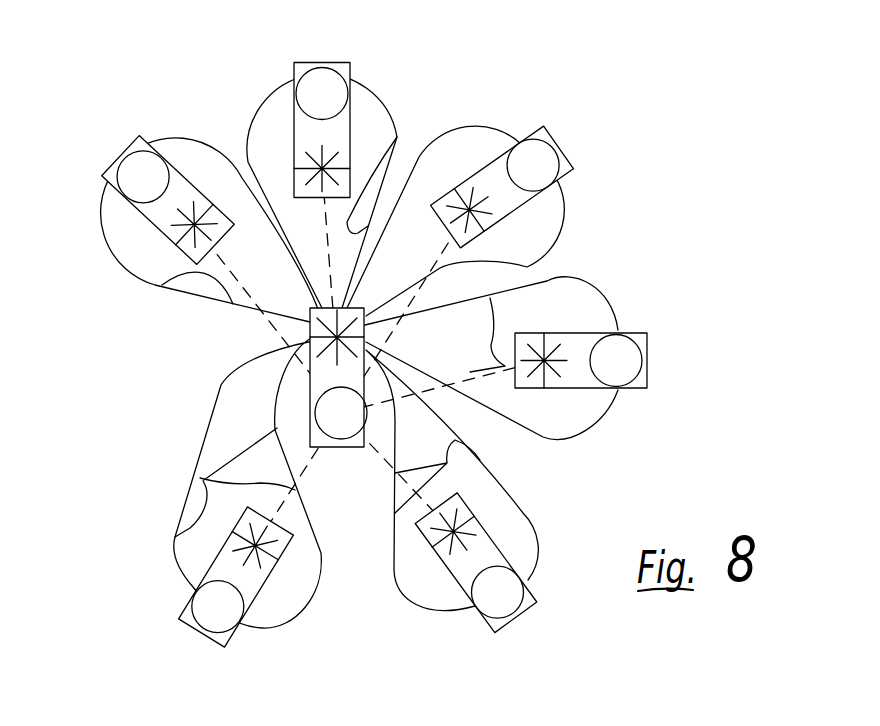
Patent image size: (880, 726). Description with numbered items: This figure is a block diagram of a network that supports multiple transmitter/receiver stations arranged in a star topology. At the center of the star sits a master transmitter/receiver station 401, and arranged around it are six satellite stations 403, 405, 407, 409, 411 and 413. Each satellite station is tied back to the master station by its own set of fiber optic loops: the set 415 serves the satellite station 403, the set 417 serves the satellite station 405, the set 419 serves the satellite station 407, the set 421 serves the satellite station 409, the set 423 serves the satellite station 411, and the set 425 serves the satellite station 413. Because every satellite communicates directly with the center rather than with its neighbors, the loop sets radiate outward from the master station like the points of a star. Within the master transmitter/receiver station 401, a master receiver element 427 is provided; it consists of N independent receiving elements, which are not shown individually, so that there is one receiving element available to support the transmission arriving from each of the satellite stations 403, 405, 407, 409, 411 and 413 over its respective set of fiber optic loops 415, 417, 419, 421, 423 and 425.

The master transmitter/receiver station 401 is at (360, 447).
The satellite station 403 is at (181, 620).
The satellite station 405 is at (104, 178).
The satellite station 407 is at (345, 60).
The satellite station 409 is at (543, 127).
The satellite station 411 is at (647, 358).
The satellite station 413 is at (494, 633).
The set of fiber optic loops 415 is at (200, 478).
The set of fiber optic loops 417 is at (162, 285).
The set of fiber optic loops 419 is at (399, 137).
The set of fiber optic loops 421 is at (527, 268).
The set of fiber optic loops 423 is at (491, 358).
The set of fiber optic loops 425 is at (480, 460).
The master receiver element 427 is at (308, 324).